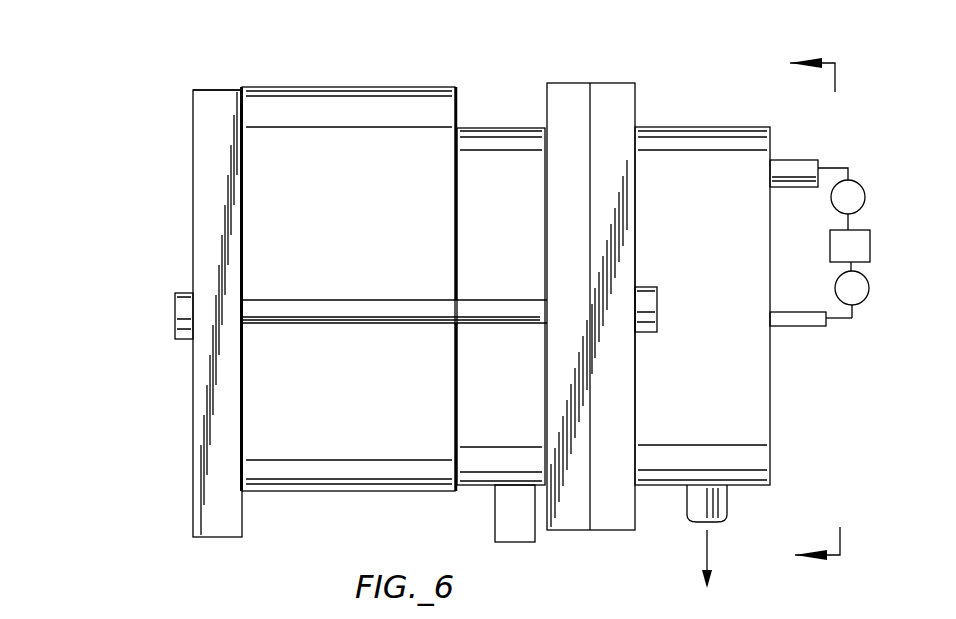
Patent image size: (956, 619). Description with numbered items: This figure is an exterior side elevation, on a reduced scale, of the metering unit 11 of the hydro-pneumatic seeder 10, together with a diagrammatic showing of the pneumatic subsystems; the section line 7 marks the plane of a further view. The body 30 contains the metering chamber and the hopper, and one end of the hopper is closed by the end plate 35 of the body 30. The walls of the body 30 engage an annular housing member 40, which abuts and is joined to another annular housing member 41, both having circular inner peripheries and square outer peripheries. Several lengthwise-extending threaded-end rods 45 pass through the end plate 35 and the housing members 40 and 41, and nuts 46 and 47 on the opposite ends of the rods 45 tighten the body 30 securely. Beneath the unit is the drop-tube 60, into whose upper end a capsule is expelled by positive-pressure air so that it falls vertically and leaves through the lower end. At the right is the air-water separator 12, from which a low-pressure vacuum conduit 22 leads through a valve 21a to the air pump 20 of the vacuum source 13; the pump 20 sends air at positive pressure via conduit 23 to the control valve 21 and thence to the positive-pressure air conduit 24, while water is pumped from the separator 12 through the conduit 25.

The section line 7- 7 is at (805, 311).
The hydro-pneumatic seeder 10 is at (186, 119).
The metering unit 11 is at (186, 83).
The air-water separator 12 is at (790, 425).
The vacuum source 13 is at (835, 348).
The air pump 20 is at (828, 247).
The control valve 21 is at (834, 288).
The valve 21a is at (831, 197).
The vacuum conduit 22 is at (780, 165).
The conduit 23 is at (826, 322).
The positive-pressure air conduit 24 is at (825, 328).
The conduit 25 is at (728, 505).
The body 30 is at (450, 62).
The end plate 35 is at (198, 385).
The annular housing member 40 is at (551, 97).
The annular housing member 41 is at (618, 99).
The threaded-end rods 45 is at (352, 300).
The nut 46 is at (172, 308).
The nut 47 is at (658, 305).
The drop-tube 60 is at (505, 514).